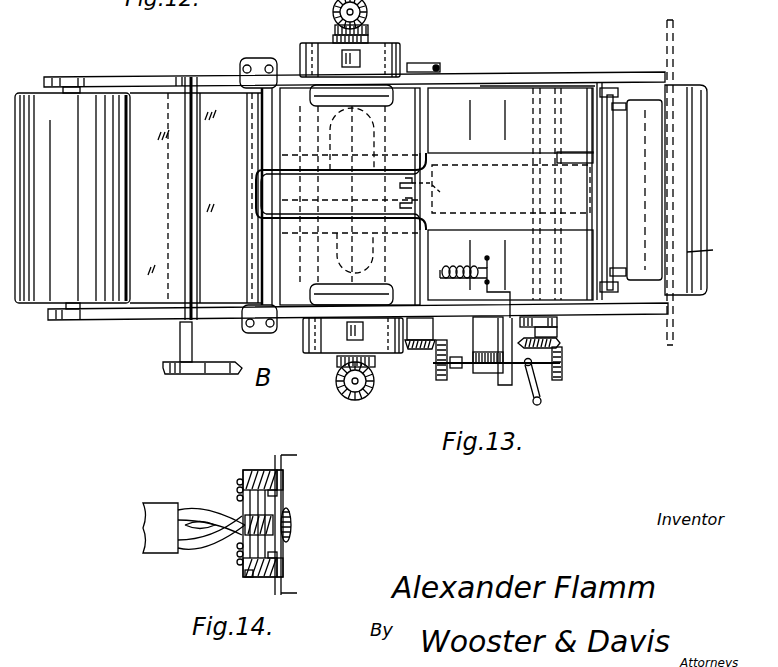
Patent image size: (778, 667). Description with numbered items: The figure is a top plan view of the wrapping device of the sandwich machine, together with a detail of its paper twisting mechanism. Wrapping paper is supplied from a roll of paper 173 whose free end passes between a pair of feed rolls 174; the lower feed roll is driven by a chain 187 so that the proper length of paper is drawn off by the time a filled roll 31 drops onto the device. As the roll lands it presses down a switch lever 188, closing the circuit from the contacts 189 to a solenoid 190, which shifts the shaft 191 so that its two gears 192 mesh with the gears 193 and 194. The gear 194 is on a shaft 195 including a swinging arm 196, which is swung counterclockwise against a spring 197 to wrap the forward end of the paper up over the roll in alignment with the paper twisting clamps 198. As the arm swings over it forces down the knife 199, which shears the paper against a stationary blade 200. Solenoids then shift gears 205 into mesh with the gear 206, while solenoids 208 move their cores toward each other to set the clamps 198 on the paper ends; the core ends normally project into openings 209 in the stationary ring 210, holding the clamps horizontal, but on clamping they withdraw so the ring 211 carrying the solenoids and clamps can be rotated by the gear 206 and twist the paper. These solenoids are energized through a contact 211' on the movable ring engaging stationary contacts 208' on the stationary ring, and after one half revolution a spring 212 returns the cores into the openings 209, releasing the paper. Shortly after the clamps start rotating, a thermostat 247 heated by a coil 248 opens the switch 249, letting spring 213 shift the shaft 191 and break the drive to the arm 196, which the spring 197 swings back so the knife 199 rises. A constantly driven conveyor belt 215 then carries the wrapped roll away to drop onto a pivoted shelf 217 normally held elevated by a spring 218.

In FIG. 13, the roll 31 is at (425, 132).
In FIG. 13, the roll of paper 173 is at (72, 198).
In FIG. 13, the feed rolls 174 is at (180, 240).
In FIG. 13, the chain 187 is at (222, 375).
In FIG. 13, the switch lever 188 is at (378, 236).
In FIG. 13, the contacts 189 is at (418, 190).
In FIG. 13, the solenoid 190 is at (487, 375).
In FIG. 13, the shaft 191 is at (527, 368).
In FIG. 13, the gears 192 is at (441, 382).
In FIG. 13, the gear 193 is at (558, 338).
In FIG. 13, the gear 194 is at (421, 352).
In FIG. 13, the shaft 195 is at (430, 247).
In FIG. 13, the swinging arm 196 is at (243, 251).
In FIG. 13, the spring 197 is at (416, 63).
In FIG. 13, the paper twisting clamps 198 is at (375, 108).
In FIG. 14, the paper twisting clamps 198 is at (186, 506).
In FIG. 13, the knife 199 is at (258, 283).
In FIG. 13, the stationary blade 200 is at (258, 262).
In FIG. 13, the gears 205 is at (369, 14).
In FIG. 13, the gear 206 is at (372, 32).
In FIG. 14, the gear 206 is at (292, 525).
In FIG. 14, the solenoids 208 is at (265, 522).
In FIG. 14, the stationary contacts 208' is at (304, 523).
In FIG. 13, the openings 209 is at (342, 56).
In FIG. 14, the openings 209 is at (268, 470).
In FIG. 13, the stationary ring 210 is at (405, 48).
In FIG. 14, the stationary ring 210 is at (245, 470).
In FIG. 14, the ring 211 is at (224, 582).
In FIG. 14, the contact 211' is at (298, 524).
In FIG. 14, the spring 212 is at (236, 489).
In FIG. 13, the spring 213 is at (541, 399).
In FIG. 13, the conveyor belt 215 is at (470, 78).
In FIG. 13, the pivoted shelf 217 is at (631, 190).
In FIG. 13, the spring 218 is at (626, 110).
In FIG. 13, the thermostat 247 is at (480, 283).
In FIG. 13, the coil 248 is at (480, 268).
In FIG. 13, the switch 249 is at (490, 262).